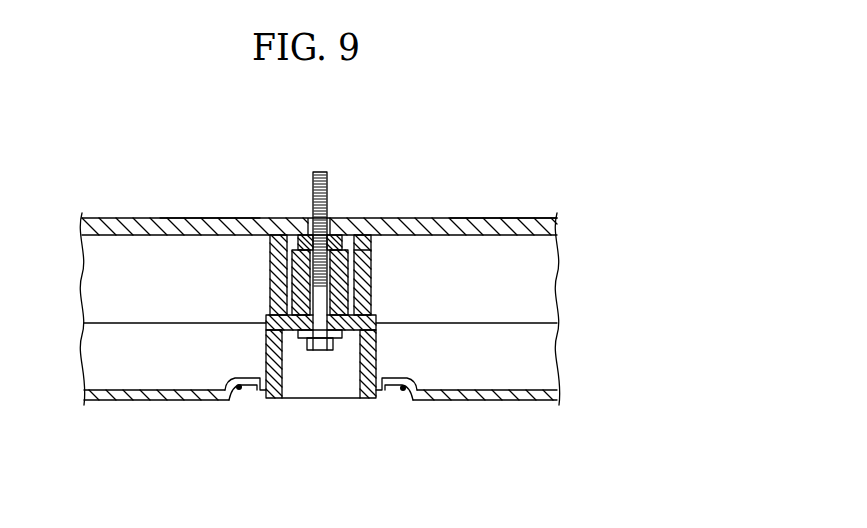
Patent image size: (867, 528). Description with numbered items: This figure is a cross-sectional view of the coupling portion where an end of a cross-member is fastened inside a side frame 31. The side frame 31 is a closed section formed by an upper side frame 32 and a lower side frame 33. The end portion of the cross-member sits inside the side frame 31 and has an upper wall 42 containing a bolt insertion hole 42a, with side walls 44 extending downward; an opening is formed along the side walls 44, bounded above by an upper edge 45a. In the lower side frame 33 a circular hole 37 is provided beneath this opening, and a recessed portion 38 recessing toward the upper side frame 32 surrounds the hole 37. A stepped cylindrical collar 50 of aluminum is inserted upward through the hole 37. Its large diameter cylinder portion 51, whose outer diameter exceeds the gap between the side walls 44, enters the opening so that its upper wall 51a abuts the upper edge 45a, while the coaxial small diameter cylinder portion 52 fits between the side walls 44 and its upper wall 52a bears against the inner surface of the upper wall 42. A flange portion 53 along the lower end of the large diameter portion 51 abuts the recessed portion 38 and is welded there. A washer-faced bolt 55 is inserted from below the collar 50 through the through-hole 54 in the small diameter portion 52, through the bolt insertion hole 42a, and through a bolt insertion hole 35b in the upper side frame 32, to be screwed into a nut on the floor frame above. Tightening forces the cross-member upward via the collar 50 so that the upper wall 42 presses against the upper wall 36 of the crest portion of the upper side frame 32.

The side frame 31 is at (507, 218).
The upper side frame 32 is at (142, 218).
The lower side frame 33 is at (132, 398).
The bolt insertion hole 35b is at (329, 220).
The upper wall 36 is at (207, 218).
The circular hole 37 is at (378, 373).
The recessed portion 38 is at (248, 398).
The upper wall 42 is at (286, 222).
The bolt insertion hole 42a is at (306, 222).
The side walls 44 is at (374, 250).
The upper edge 45a is at (268, 316).
The stepped cylindrical collar 50 is at (378, 336).
The large diameter cylinder portion 51 is at (267, 348).
The upper wall 51a is at (377, 312).
The small diameter cylinder portion 52 is at (273, 268).
The upper wall 52a is at (352, 222).
The flange portion 53 is at (389, 398).
The through-hole 54 is at (322, 320).
The washer-faced bolt 55 is at (338, 347).